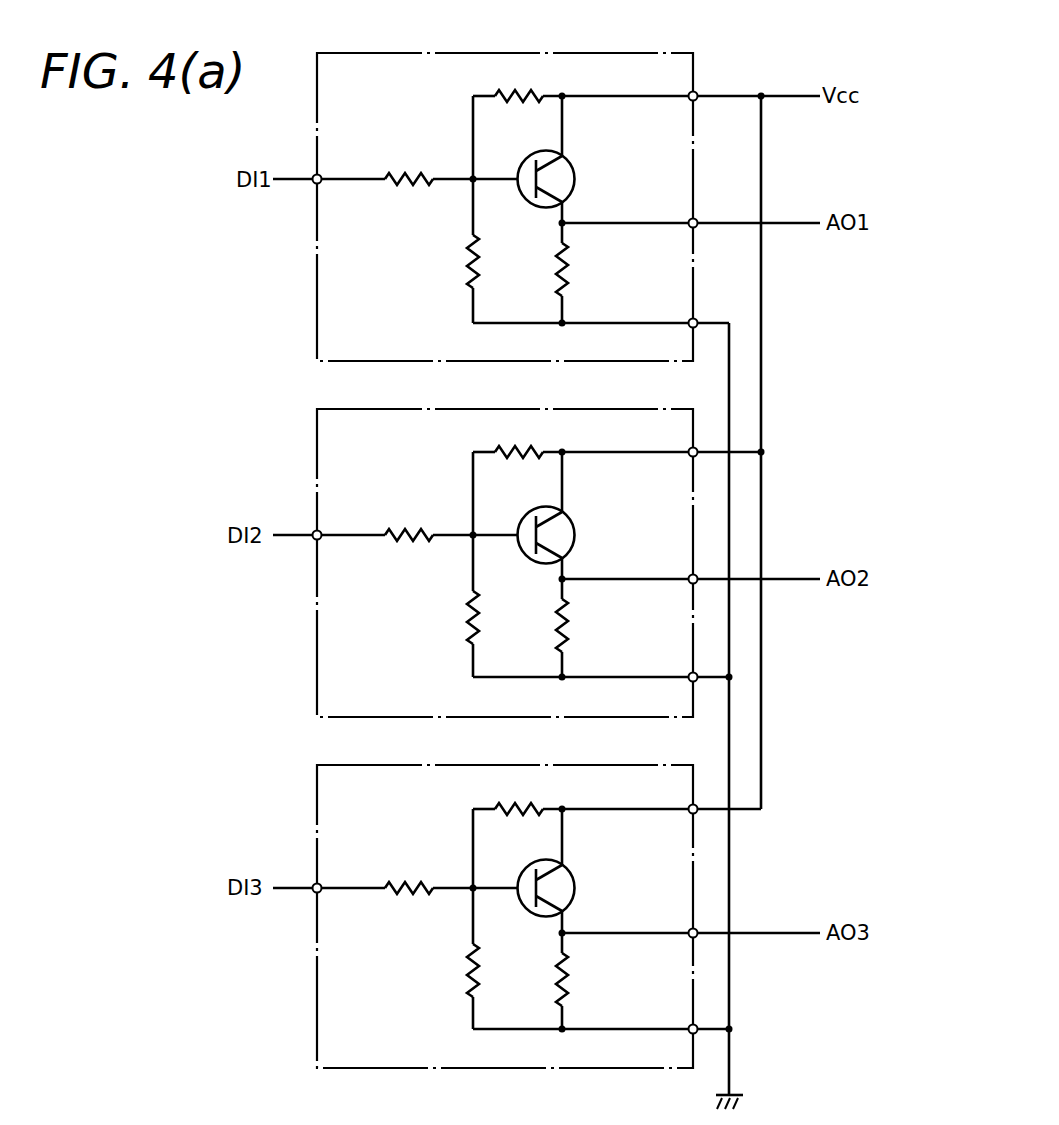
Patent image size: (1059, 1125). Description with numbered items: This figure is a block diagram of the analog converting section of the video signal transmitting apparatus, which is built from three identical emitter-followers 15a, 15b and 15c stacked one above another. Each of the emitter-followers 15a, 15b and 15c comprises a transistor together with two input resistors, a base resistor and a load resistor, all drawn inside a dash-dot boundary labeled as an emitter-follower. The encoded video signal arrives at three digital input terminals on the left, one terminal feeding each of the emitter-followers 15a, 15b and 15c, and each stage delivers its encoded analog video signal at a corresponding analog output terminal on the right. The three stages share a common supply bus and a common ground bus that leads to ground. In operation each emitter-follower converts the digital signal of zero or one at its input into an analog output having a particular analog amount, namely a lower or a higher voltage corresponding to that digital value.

The emitter-follower 15a is at (352, 53).
The emitter-follower 15b is at (354, 409).
The emitter-follower 15c is at (355, 765).